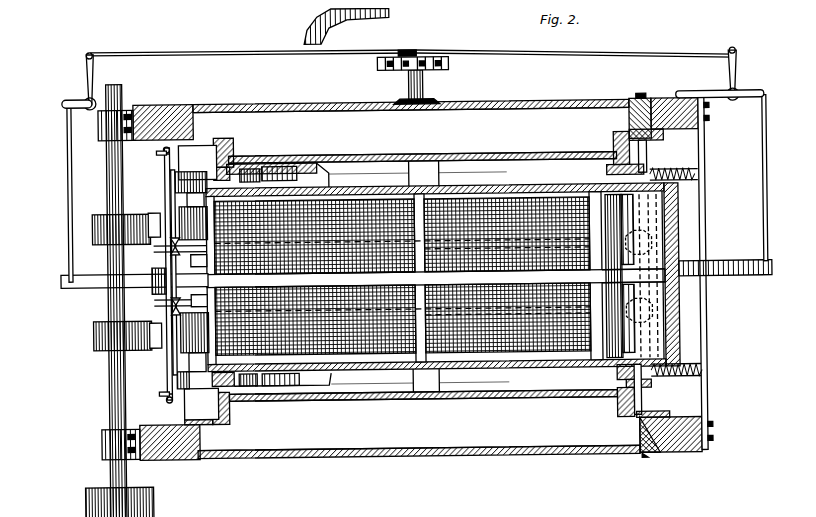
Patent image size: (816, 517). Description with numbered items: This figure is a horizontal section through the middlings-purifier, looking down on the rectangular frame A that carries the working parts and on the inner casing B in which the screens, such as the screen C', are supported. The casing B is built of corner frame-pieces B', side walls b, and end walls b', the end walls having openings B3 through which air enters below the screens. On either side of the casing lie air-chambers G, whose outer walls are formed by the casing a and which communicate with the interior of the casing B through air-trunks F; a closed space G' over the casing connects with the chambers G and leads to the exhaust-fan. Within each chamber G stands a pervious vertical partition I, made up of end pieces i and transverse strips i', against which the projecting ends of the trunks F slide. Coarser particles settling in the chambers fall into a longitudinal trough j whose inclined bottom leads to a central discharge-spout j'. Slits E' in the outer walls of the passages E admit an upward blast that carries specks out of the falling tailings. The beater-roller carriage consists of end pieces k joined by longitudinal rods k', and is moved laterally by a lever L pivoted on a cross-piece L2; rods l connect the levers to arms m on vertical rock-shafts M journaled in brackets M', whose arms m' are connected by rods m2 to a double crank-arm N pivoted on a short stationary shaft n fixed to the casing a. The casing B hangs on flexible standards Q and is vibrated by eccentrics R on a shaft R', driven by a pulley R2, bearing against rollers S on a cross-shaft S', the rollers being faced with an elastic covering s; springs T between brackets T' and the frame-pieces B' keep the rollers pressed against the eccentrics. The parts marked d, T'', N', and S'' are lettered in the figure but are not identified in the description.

The casing a is at (466, 96).
The rectangular frame A is at (160, 96).
The end plate T'' is at (718, 272).
The vertical partition I is at (505, 147).
The transverse strips i' is at (422, 273).
The end pieces i is at (408, 275).
The bearing piece d is at (245, 158).
The air-trunks F is at (312, 165).
The air-chambers G is at (417, 278).
The closed space G' is at (423, 277).
The central discharge-spout j' is at (425, 276).
The longitudinal trough j is at (419, 278).
The side walls b is at (436, 279).
The screen C' is at (315, 277).
The passages E is at (402, 273).
The horizontal openings or slits E' is at (654, 275).
The openings B3 is at (665, 198).
The end walls b' is at (683, 274).
The lever L is at (416, 264).
The shaft R' is at (103, 301).
The eccentrics R is at (111, 282).
The elastic covering s is at (155, 280).
The pulley R2 is at (120, 502).
The rods l is at (412, 189).
The rods m2 is at (411, 47).
The arms m' is at (420, 74).
The vertical rock-shafts M is at (394, 92).
The arms m is at (407, 96).
The brackets M' is at (720, 85).
The double crank-arm N is at (413, 63).
The short stationary shaft n is at (412, 42).
The rack bar N' is at (427, 64).
The inner frame or casing B is at (656, 149).
The corner frame-pieces B' is at (414, 280).
The springs T is at (682, 182).
The brackets T' is at (668, 391).
The flexible standards Q is at (655, 158).
The rollers S is at (151, 275).
The cross-shaft S' is at (157, 272).
The shifter tie S'' is at (153, 275).
The cross-pieces L2 is at (150, 142).
The end pieces k is at (167, 277).
The central longitudinal rods k' is at (199, 280).